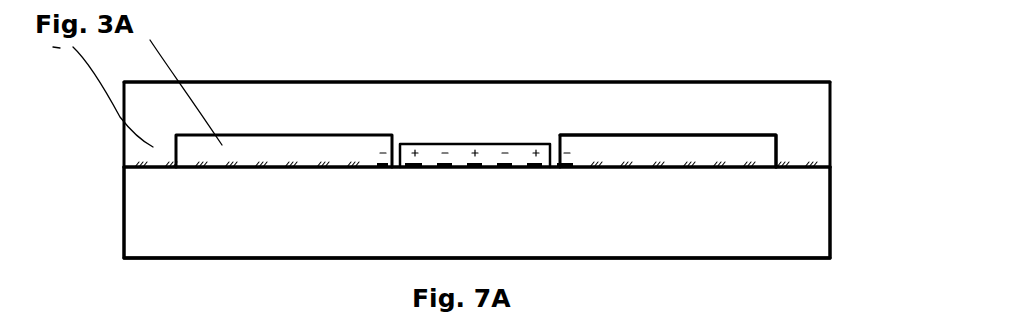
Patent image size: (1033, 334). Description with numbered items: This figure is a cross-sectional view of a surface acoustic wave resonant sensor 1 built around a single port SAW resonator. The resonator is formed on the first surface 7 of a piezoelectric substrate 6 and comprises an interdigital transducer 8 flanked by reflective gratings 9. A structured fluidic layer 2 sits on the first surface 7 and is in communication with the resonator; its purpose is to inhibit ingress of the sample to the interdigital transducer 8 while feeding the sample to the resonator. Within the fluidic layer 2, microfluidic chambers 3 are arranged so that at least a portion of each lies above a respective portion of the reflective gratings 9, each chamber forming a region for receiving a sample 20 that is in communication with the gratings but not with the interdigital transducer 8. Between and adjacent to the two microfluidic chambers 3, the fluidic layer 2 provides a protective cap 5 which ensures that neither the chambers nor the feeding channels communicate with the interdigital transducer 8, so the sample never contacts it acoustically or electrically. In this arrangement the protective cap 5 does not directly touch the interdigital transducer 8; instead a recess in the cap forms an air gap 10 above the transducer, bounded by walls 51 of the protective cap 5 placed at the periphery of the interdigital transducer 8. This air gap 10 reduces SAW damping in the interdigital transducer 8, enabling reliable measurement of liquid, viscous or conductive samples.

The surface acoustic wave resonant sensor 1 is at (355, 78).
The fluidic layer 2 is at (812, 97).
The microfluidic chamber 3 is at (740, 147).
The protective cap 5 is at (525, 135).
The piezoelectric substrate 6 is at (356, 191).
The first surface 7 is at (833, 168).
The interdigital transducer 8 is at (465, 168).
The reflective grating 9 is at (222, 170).
The air gap 10 is at (437, 155).
The region for receiving a sample 20 is at (293, 157).
The walls of the protective cap 51 is at (393, 163).